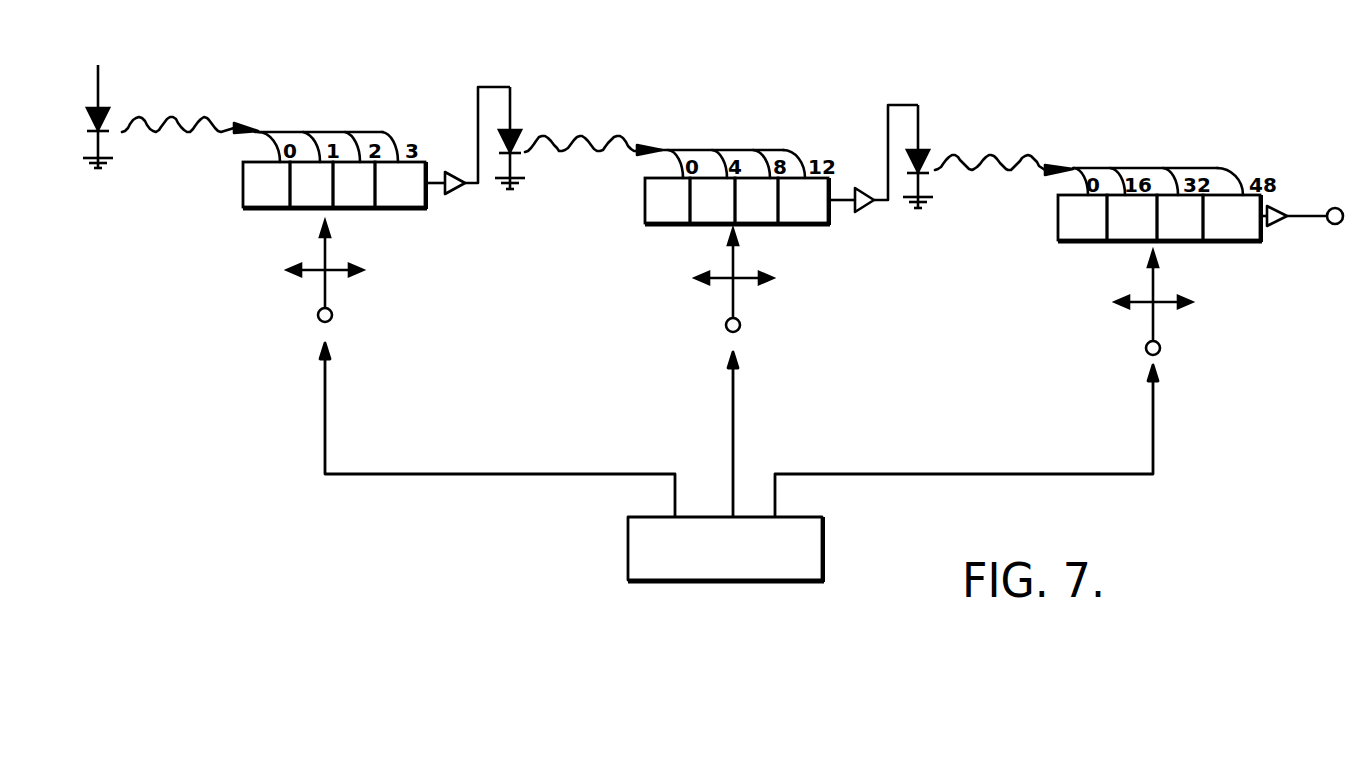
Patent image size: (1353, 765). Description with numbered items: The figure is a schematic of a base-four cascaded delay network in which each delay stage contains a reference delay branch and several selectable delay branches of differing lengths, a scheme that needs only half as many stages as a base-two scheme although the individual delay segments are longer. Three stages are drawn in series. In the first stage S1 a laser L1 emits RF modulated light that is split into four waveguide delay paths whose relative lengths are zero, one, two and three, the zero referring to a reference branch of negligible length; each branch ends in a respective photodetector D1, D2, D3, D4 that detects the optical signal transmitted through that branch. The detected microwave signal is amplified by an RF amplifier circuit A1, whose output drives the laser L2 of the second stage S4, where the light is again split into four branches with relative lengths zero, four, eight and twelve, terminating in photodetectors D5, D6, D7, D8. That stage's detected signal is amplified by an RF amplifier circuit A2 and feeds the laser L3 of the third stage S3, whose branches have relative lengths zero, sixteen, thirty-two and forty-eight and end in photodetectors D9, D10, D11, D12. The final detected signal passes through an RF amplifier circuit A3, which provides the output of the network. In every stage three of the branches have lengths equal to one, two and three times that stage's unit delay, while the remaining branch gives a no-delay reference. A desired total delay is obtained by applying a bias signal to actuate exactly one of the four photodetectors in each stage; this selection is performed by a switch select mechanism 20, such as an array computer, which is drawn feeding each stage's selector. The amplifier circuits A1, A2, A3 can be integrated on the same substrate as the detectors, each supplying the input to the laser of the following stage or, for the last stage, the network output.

The laser L1 is at (107, 112).
The laser L2 is at (519, 128).
The laser L3 is at (927, 150).
The RF amplifier circuit A1 is at (453, 172).
The RF amplifier circuit A2 is at (866, 190).
The RF amplifier circuit A3 is at (1283, 212).
The first stage S1 is at (218, 247).
The second stage S4 is at (621, 261).
The third stage S3 is at (1081, 264).
The switch select mechanism 20 is at (643, 555).
The photodetector D1 is at (266, 184).
The photodetector D2 is at (311, 184).
The photodetector D3 is at (354, 184).
The photodetector D4 is at (400, 184).
The photodetector D5 is at (667, 200).
The photodetector D6 is at (712, 200).
The photodetector D7 is at (756, 200).
The photodetector D8 is at (803, 200).
The photodetector D9 is at (1082, 217).
The photodetector D10 is at (1132, 217).
The photodetector D11 is at (1180, 217).
The photodetector D12 is at (1231, 217).